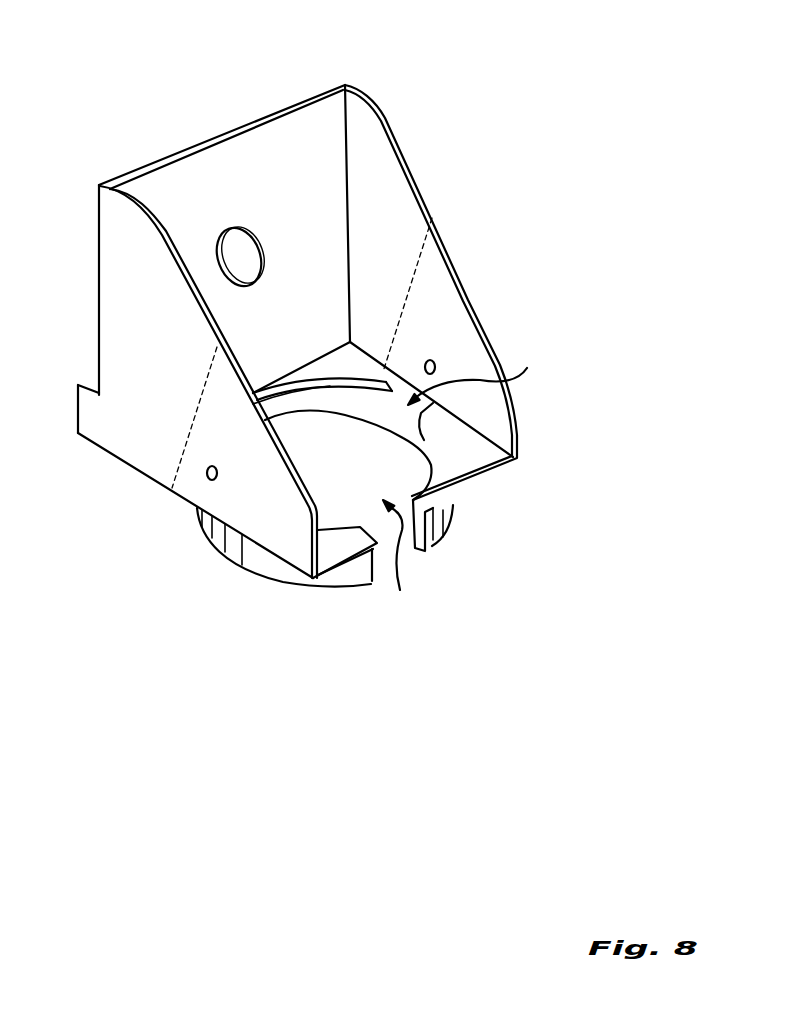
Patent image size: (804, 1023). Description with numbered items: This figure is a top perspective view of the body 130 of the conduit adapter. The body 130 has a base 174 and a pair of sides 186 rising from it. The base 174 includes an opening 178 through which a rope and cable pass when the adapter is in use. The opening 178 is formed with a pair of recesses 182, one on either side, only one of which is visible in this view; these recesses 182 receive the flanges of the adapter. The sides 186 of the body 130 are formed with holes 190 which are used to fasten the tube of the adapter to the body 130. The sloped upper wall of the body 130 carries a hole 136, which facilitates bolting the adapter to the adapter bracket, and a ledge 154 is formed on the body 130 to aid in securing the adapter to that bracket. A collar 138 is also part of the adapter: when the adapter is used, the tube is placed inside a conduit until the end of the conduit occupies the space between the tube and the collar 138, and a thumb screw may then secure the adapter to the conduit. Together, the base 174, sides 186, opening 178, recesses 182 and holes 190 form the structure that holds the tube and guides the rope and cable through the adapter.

The body 130 is at (365, 107).
The hole 136 is at (240, 250).
The sides 186 is at (127, 265).
The ledge 154 is at (97, 378).
The holes 190 is at (440, 366).
The recesses 182 is at (475, 375).
The base 174 is at (472, 455).
The collar 138 is at (455, 512).
The opening 178 is at (411, 552).